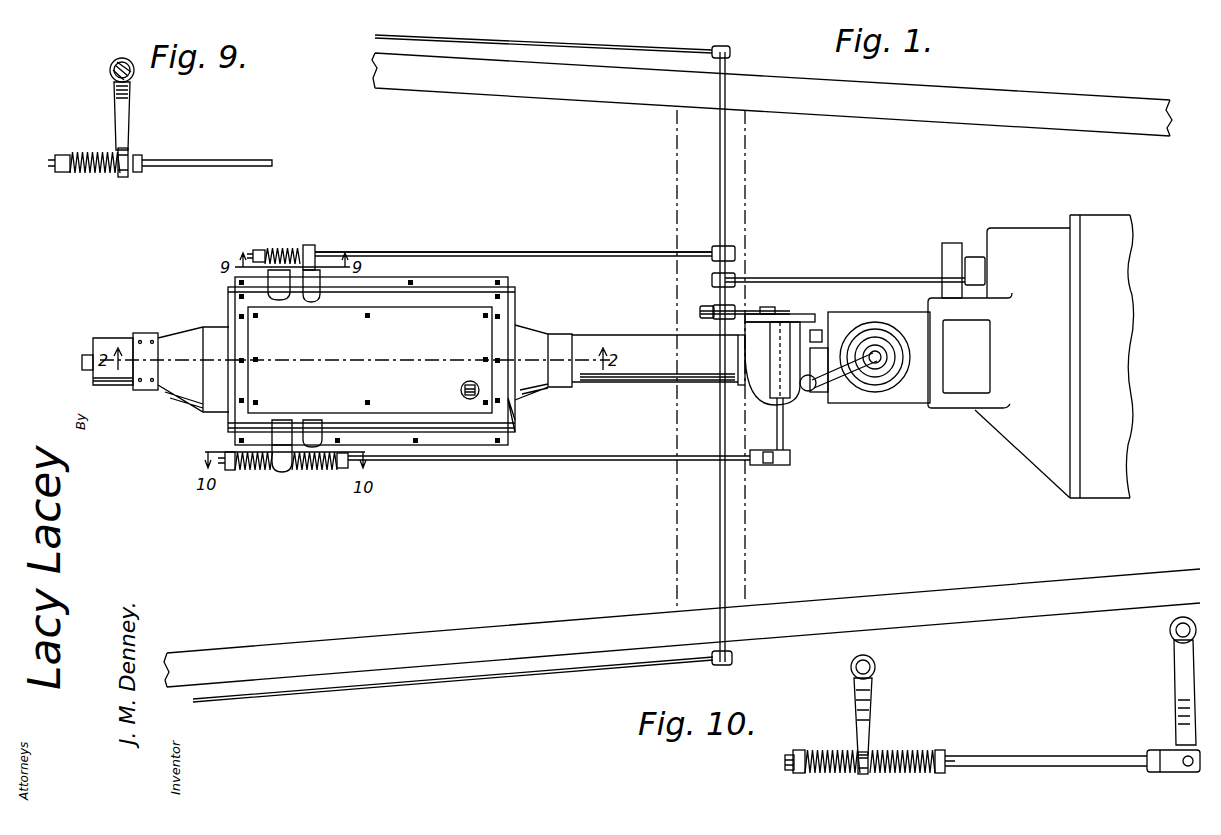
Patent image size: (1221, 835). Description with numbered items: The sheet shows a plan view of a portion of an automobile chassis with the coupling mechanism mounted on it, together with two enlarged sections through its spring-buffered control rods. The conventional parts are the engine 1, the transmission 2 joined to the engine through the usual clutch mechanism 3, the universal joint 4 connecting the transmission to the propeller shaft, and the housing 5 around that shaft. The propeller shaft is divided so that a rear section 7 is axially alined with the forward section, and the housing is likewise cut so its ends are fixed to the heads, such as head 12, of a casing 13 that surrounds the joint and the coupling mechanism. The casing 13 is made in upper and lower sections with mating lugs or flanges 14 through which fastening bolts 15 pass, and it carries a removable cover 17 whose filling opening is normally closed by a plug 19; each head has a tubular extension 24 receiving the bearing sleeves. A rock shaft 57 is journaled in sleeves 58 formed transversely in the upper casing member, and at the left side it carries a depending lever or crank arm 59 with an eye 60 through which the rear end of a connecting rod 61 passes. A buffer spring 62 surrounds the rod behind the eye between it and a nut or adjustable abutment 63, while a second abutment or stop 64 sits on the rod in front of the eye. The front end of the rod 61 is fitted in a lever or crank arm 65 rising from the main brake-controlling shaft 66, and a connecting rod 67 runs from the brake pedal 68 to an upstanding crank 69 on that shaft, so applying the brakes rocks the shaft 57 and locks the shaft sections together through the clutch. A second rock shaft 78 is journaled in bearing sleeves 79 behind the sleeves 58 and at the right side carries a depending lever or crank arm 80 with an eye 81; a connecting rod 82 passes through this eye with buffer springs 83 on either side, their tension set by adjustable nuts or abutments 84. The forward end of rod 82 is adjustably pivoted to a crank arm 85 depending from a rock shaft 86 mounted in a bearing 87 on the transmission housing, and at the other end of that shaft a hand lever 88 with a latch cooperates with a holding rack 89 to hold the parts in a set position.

In FIG. 1, the engine 1 is at (1102, 356).
In FIG. 1, the transmission 2 is at (875, 405).
In FIG. 1, the clutch mechanism 3 is at (999, 363).
In FIG. 1, the universal joint 4 is at (765, 405).
In FIG. 1, the propeller shaft housing 5 is at (640, 372).
In FIG. 1, the rear section 7 is at (88, 345).
In FIG. 1, the head 12 is at (530, 403).
In FIG. 1, the casing 13 is at (460, 430).
In FIG. 1, the lugs or flanges 14 is at (490, 442).
In FIG. 1, the fastening bolts 15 is at (406, 277).
In FIG. 1, the removable cover 17 is at (370, 360).
In FIG. 1, the plug 19 is at (462, 386).
In FIG. 1, the tubular extensions 24 is at (540, 338).
In FIG. 9, the rock shaft 57 is at (118, 58).
In FIG. 1, the sleeves 58 is at (314, 302).
In FIG. 9, the lever or crank arm 59 is at (124, 106).
In FIG. 9, the eye 60 is at (124, 178).
In FIG. 1, the connecting rod 61 is at (455, 252).
In FIG. 9, the connecting rod 61 is at (232, 159).
In FIG. 1, the buffer spring 62 is at (288, 248).
In FIG. 9, the buffer spring 62 is at (85, 172).
In FIG. 1, the nut or adjustable abutment 63 is at (258, 250).
In FIG. 9, the nut or adjustable abutment 63 is at (60, 155).
In FIG. 9, the abutment or stop 64 is at (142, 157).
In FIG. 1, the lever or crank arm 65 is at (735, 250).
In FIG. 1, the main brake-controlling shaft 66 is at (727, 163).
In FIG. 1, the connecting rod 67 is at (862, 279).
In FIG. 1, the brake pedal 68 is at (985, 270).
In FIG. 1, the upstanding crank 69 is at (737, 278).
In FIG. 10, the rock shaft 78 is at (876, 670).
In FIG. 1, the bearing sleeves 79 is at (282, 302).
In FIG. 10, the lever or crank arm 80 is at (870, 718).
In FIG. 10, the eye 81 is at (866, 774).
In FIG. 1, the connecting rod 82 is at (600, 461).
In FIG. 10, the connecting rod 82 is at (1016, 756).
In FIG. 1, the buffer springs 83 is at (310, 472).
In FIG. 10, the buffer springs 83 is at (820, 774).
In FIG. 1, the adjustable nuts or abutments 84 is at (230, 472).
In FIG. 10, the adjustable nuts or abutments 84 is at (797, 750).
In FIG. 1, the crank arm 85 is at (772, 466).
In FIG. 10, the crank arm 85 is at (1172, 686).
In FIG. 1, the rock shaft 86 is at (785, 440).
In FIG. 10, the rock shaft 86 is at (1170, 636).
In FIG. 1, the bearing 87 is at (778, 372).
In FIG. 1, the hand lever 88 is at (705, 311).
In FIG. 1, the holding rack 89 is at (803, 314).